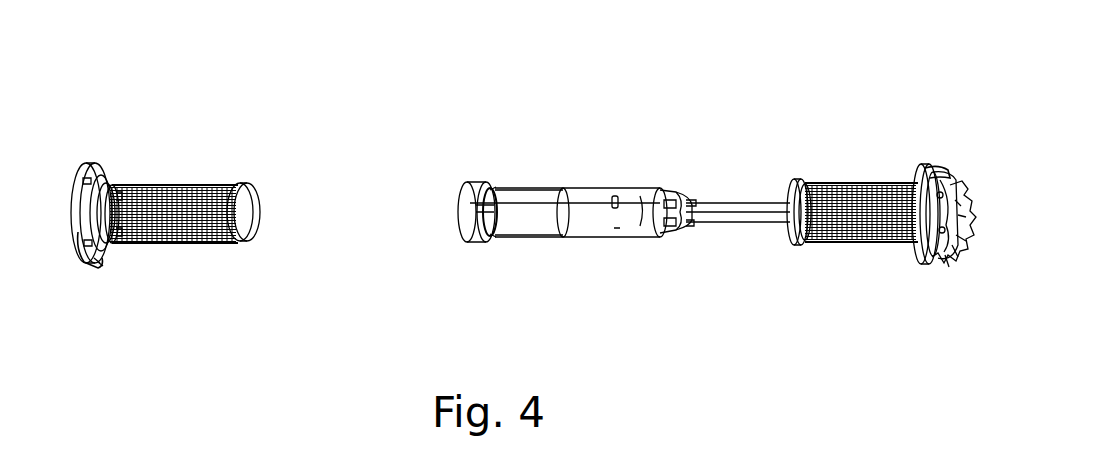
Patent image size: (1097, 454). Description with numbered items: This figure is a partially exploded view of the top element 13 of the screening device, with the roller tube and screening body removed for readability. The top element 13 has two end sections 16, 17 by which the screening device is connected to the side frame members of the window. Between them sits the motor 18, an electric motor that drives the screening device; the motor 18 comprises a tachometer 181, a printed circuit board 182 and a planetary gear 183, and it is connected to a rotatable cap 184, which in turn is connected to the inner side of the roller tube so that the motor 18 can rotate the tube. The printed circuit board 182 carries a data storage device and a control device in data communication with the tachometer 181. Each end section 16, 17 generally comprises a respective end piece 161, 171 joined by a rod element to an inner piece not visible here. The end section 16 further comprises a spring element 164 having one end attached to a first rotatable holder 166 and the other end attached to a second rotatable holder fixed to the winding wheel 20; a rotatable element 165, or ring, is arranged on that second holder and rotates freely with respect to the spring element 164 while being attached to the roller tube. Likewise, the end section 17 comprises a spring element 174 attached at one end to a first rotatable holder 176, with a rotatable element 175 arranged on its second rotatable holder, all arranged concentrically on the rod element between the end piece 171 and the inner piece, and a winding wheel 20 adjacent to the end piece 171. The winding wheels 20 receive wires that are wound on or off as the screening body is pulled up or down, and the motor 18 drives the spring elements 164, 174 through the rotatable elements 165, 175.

The top element 13 is at (416, 128).
The end section 16 is at (850, 265).
The end section 17 is at (281, 288).
The motor 18 is at (592, 217).
The winding wheel 20 is at (83, 248).
The end piece 161 is at (917, 253).
The spring element 164 is at (837, 180).
The rotatable element 165 is at (910, 185).
The first rotatable holder 166 is at (790, 242).
The end piece 171 is at (75, 185).
The spring element 174 is at (182, 238).
The rotatable element 175 is at (120, 182).
The first rotatable holder 176 is at (237, 240).
The tachometer 181 is at (643, 190).
The printed circuit board 182 is at (690, 222).
The planetary gear 183 is at (540, 215).
The rotatable cap 184 is at (465, 237).